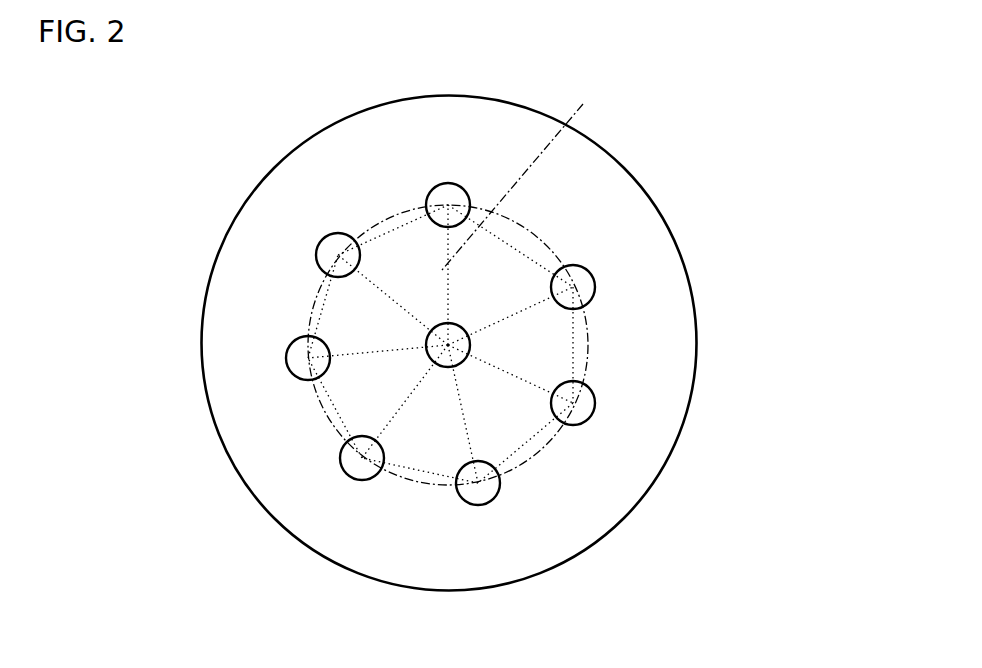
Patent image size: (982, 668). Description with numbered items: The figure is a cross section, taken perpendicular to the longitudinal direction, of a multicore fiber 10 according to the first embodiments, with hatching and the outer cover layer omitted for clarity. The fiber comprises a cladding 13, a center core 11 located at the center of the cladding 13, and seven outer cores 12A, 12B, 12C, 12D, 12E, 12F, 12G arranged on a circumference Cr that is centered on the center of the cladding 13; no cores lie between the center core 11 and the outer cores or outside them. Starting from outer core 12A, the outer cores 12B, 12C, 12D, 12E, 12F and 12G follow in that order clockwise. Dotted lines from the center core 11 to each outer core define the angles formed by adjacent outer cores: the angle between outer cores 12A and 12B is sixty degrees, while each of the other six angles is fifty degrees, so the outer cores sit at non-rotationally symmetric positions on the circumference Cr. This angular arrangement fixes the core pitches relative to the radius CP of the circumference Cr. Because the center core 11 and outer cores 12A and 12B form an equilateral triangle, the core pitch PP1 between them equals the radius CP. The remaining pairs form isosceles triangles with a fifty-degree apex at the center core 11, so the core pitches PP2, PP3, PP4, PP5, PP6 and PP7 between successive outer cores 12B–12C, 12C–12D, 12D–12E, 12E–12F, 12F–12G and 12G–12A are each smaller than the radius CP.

The multicore fiber 10 is at (668, 162).
The center core 11 is at (463, 348).
The outer core 12A is at (442, 193).
The outer core 12B is at (583, 280).
The outer core 12C is at (585, 412).
The outer core 12D is at (490, 492).
The outer core 12E is at (345, 458).
The outer core 12F is at (300, 360).
The outer core 12G is at (325, 247).
The cladding 13 is at (633, 217).
The circumference Cr is at (378, 218).
The radius of the circumference CP is at (529, 179).
The core pitch PP1 is at (530, 258).
The core pitch PP2 is at (583, 335).
The core pitch PP3 is at (545, 448).
The core pitch PP4 is at (427, 470).
The core pitch PP5 is at (323, 407).
The core pitch PP6 is at (322, 306).
The core pitch PP7 is at (400, 212).